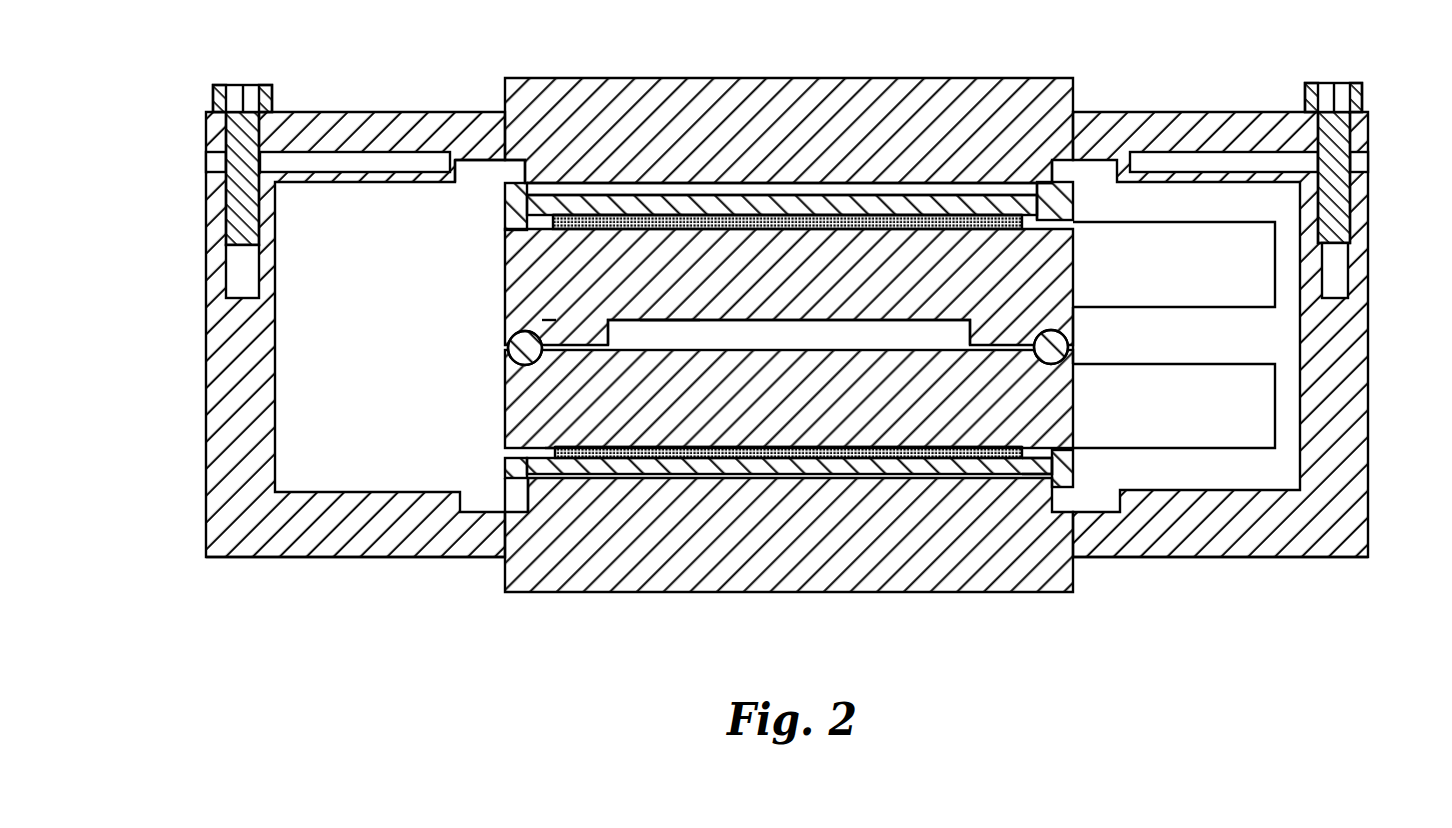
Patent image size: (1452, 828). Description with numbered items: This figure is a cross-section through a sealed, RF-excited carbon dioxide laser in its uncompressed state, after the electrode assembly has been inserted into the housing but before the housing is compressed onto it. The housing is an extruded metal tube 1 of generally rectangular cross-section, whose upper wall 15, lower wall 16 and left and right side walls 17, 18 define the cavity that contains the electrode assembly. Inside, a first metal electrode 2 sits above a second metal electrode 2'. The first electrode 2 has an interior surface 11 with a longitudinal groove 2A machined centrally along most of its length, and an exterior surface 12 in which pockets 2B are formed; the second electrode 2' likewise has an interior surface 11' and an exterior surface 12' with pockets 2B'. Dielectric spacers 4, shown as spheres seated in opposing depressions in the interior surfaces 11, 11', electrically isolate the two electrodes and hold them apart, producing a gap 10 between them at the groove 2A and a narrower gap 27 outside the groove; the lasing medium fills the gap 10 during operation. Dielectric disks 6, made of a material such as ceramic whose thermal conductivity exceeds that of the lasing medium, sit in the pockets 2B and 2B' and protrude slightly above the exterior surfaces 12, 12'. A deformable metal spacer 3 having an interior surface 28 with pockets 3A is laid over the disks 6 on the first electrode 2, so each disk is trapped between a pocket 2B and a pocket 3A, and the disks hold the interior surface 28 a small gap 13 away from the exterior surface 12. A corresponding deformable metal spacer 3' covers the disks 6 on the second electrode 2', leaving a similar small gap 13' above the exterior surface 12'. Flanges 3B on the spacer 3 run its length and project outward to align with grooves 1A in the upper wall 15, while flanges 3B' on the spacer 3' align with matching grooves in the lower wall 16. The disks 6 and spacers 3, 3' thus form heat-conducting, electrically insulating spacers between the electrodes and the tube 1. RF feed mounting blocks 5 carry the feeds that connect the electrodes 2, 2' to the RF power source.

The extruded metal tube 1 is at (262, 558).
The grooves 1A is at (522, 516).
The first metal electrode 2 is at (741, 287).
The second metal electrode 2' is at (742, 399).
The longitudinal groove 2A is at (770, 320).
The pockets 2B is at (787, 119).
The pockets 2B' is at (788, 554).
The deformable metal spacer 3 is at (782, 131).
The deformable metal spacer 3' is at (725, 454).
The pockets 3A is at (1013, 205).
The flanges 3B is at (1110, 152).
The flanges 3B' is at (498, 554).
The dielectric spacers 4 is at (512, 338).
The RF feed mounting blocks 5 is at (1213, 273).
The disks 6 is at (843, 215).
The gap 10 is at (650, 333).
The interior surface 11 is at (520, 180).
The interior surface 11' is at (593, 525).
The exterior surface 12 is at (1077, 148).
The exterior surface 12' is at (1086, 497).
The gap 13 is at (481, 143).
The gap 13' is at (1047, 547).
The upper wall 15 is at (782, 78).
The lower wall 16 is at (808, 592).
The left side wall 17 is at (206, 437).
The right side wall 18 is at (1368, 352).
The narrower gap 27 is at (1012, 320).
The interior surface 28 is at (503, 203).